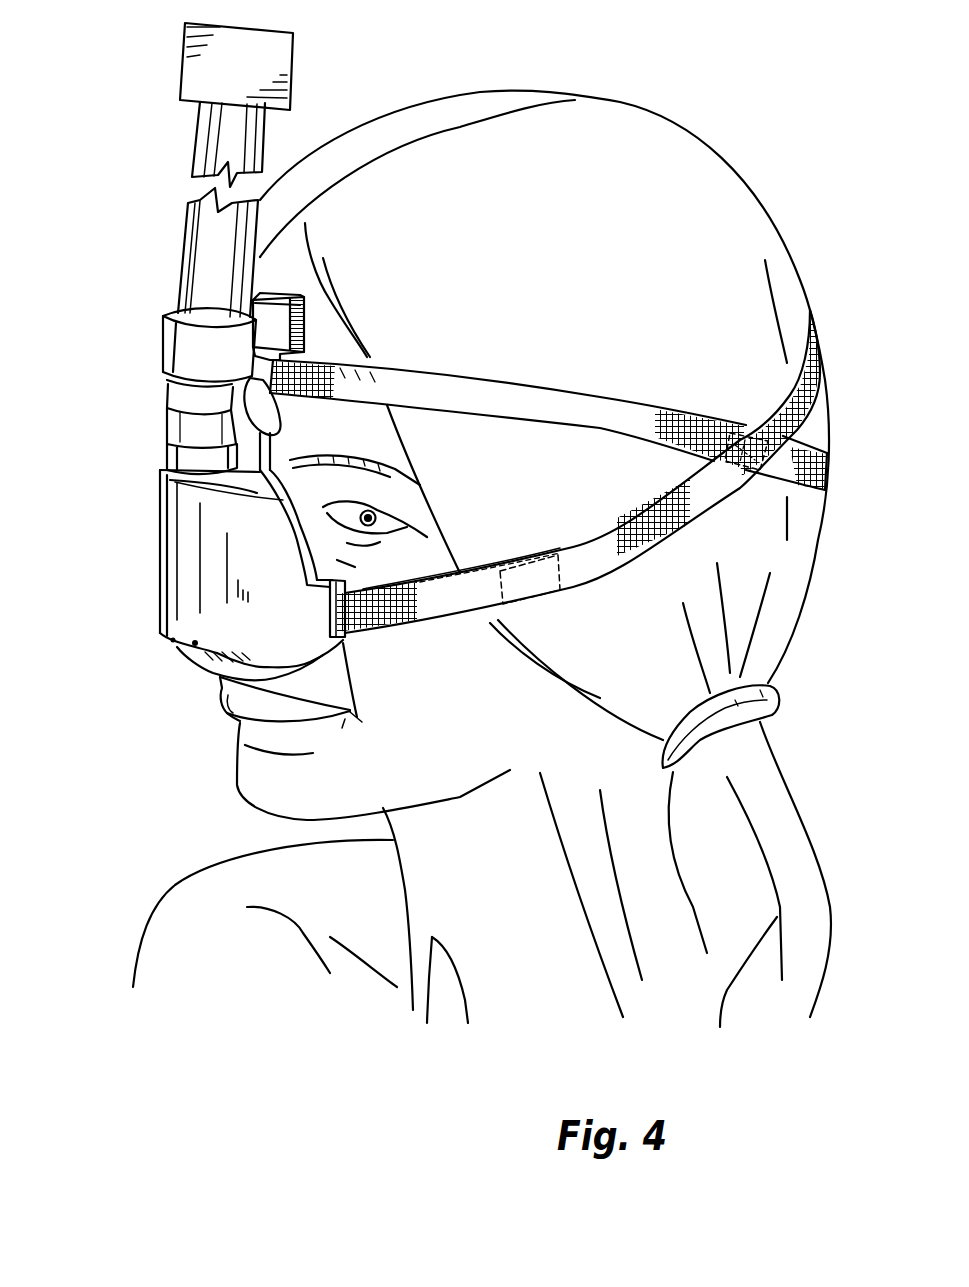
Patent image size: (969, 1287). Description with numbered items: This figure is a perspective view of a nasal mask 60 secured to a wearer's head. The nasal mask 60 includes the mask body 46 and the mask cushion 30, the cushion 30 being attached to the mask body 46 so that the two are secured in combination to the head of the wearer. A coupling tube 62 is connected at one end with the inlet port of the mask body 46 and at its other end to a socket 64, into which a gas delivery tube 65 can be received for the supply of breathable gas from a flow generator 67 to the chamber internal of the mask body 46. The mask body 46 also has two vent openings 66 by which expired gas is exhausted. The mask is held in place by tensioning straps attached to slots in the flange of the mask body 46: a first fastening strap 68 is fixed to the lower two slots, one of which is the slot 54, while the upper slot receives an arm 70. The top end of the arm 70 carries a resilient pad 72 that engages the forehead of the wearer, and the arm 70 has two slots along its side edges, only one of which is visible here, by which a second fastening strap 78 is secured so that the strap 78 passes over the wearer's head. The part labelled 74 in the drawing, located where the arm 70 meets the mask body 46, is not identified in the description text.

The nasal mask 30 is at (283, 483).
The mask shell 46 is at (187, 600).
The lower strap connector / buckle 54 is at (345, 642).
The mask and headgear assembly 60 is at (114, 316).
The elbow / swivel conduit 62 is at (190, 428).
The coupling ring 64 is at (166, 313).
The gas delivery tube 65 is at (208, 133).
The exhaust vent 66 is at (195, 643).
The tube support / flow generator connection 67 is at (284, 53).
The lower headgear strap 68 is at (598, 543).
The upper strap clip block 70 is at (305, 325).
The clip top face / hinge 72 is at (308, 314).
The flexible connector link 74 is at (278, 421).
The upper headgear strap 78 is at (478, 393).